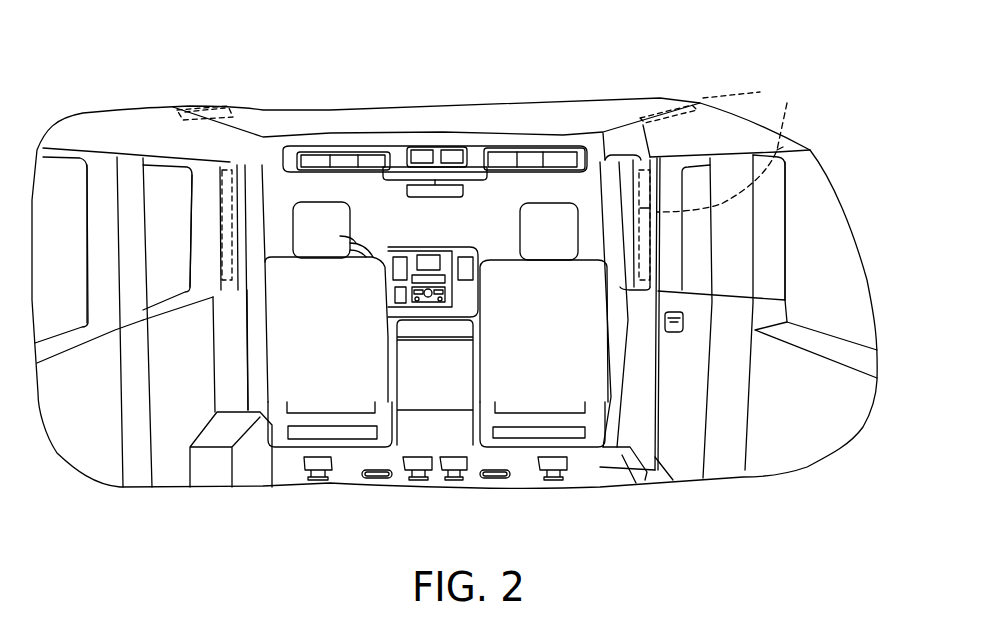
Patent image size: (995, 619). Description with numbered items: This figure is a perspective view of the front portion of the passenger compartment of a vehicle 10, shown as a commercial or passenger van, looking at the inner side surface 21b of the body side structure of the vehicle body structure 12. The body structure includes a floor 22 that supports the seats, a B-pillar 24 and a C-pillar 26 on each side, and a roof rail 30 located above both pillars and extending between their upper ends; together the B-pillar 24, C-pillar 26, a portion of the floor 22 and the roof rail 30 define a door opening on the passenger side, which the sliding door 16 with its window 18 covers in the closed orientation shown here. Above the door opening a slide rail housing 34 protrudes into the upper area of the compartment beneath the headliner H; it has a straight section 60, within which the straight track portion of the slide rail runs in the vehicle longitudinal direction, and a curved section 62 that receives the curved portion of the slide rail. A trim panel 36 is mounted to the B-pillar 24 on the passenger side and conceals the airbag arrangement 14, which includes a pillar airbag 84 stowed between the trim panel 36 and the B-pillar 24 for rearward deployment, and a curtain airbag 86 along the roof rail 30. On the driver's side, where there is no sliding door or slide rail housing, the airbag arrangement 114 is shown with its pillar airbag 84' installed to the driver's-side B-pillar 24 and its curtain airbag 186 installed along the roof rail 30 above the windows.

The vehicle 10 is at (315, 36).
The vehicle body structure 12 is at (455, 100).
The headliner H is at (370, 122).
The airbag arrangement 114 is at (265, 68).
The curtain airbag 186 is at (225, 105).
The pillar airbag 84' is at (243, 179).
The slide rail housing 34 is at (670, 62).
The curved section 62 is at (613, 143).
The straight section 60 is at (665, 138).
The roof rail 30 is at (671, 110).
The airbag arrangement 14 is at (813, 82).
The curtain airbag 86 is at (703, 98).
The pillar airbag 84 is at (789, 115).
The trim panel 36 is at (627, 270).
The B-pillar 24 is at (243, 200).
The C-pillar 26 is at (130, 212).
The window 18 is at (694, 243).
The inner side surface 21b is at (725, 355).
The sliding door 16 is at (675, 408).
The floor 22 is at (283, 467).